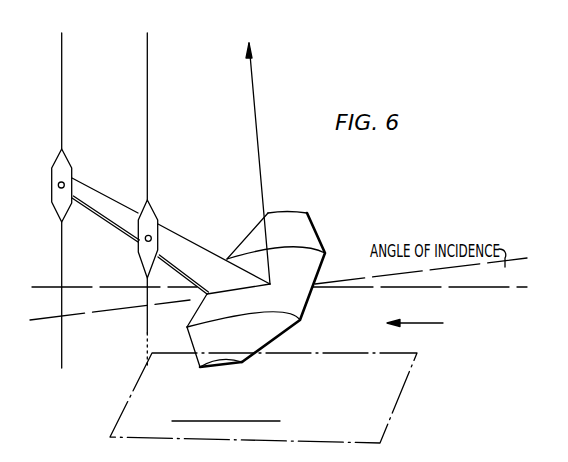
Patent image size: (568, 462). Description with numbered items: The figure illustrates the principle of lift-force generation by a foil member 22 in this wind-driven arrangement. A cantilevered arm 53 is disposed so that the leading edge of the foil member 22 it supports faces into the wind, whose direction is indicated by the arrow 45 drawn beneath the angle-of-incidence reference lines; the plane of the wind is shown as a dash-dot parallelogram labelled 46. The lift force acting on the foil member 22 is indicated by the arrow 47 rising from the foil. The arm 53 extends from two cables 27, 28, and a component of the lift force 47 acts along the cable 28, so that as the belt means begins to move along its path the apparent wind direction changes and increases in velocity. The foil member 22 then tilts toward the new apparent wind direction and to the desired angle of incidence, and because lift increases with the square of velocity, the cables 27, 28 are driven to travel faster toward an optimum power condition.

The cable 27 is at (62, 85).
The cable 28 is at (145, 70).
The cantilevered arm 53 is at (175, 242).
The foil member 22 is at (315, 230).
The lift force arrow 47 is at (255, 102).
The wind direction arrow 45 is at (413, 320).
The plane of wind 46 is at (417, 353).